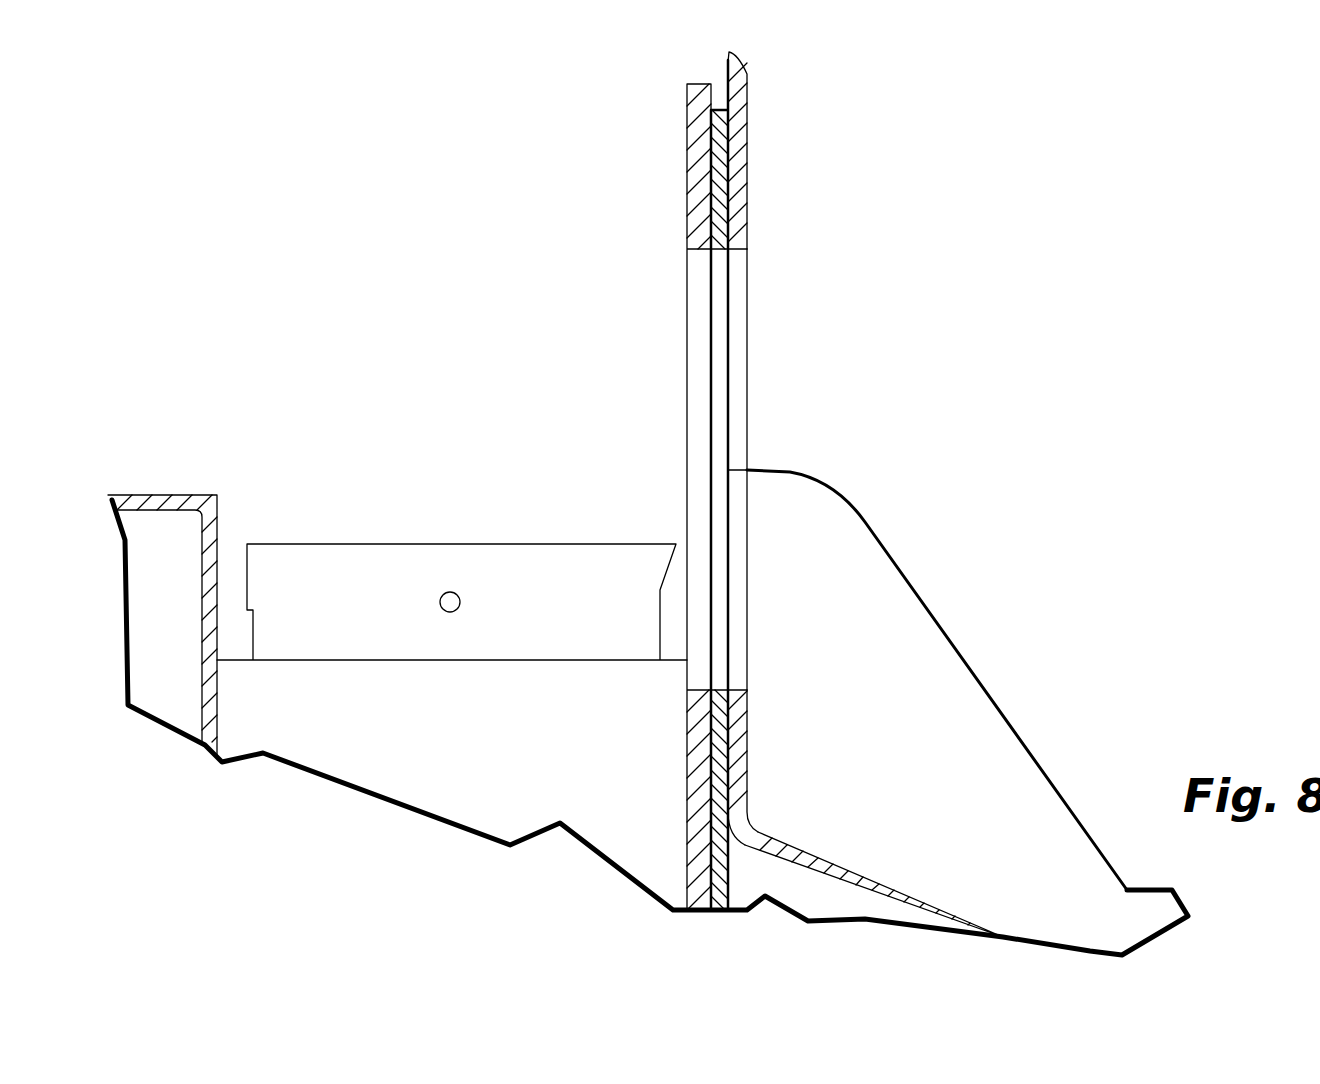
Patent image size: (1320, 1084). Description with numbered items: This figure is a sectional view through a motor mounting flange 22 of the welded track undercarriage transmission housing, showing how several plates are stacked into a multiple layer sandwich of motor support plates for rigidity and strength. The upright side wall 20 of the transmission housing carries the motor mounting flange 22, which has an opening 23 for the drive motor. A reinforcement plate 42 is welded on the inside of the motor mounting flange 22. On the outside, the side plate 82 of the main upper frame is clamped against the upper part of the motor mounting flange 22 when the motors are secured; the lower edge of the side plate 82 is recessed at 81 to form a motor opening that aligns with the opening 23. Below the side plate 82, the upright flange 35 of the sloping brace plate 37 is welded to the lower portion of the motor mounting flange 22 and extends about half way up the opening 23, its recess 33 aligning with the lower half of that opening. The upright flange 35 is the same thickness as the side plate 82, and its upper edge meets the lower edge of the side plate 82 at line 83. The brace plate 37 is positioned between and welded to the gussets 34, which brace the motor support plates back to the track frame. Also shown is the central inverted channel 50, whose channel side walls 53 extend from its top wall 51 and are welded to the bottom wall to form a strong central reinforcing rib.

The side wall 20 is at (718, 860).
The motor mounting flange 22 is at (720, 140).
The opening 23 is at (718, 337).
The recess 33 is at (738, 558).
The gusset 34 is at (883, 595).
The upright flange 35 is at (738, 748).
The brace plate 37 is at (862, 880).
The reinforcement plate 42 is at (689, 150).
The central inverted channel 50 is at (195, 586).
The top wall 51 is at (147, 495).
The channel side wall 53 is at (218, 527).
The recess 81 is at (738, 363).
The side plate 82 is at (738, 208).
The line 83 is at (738, 470).